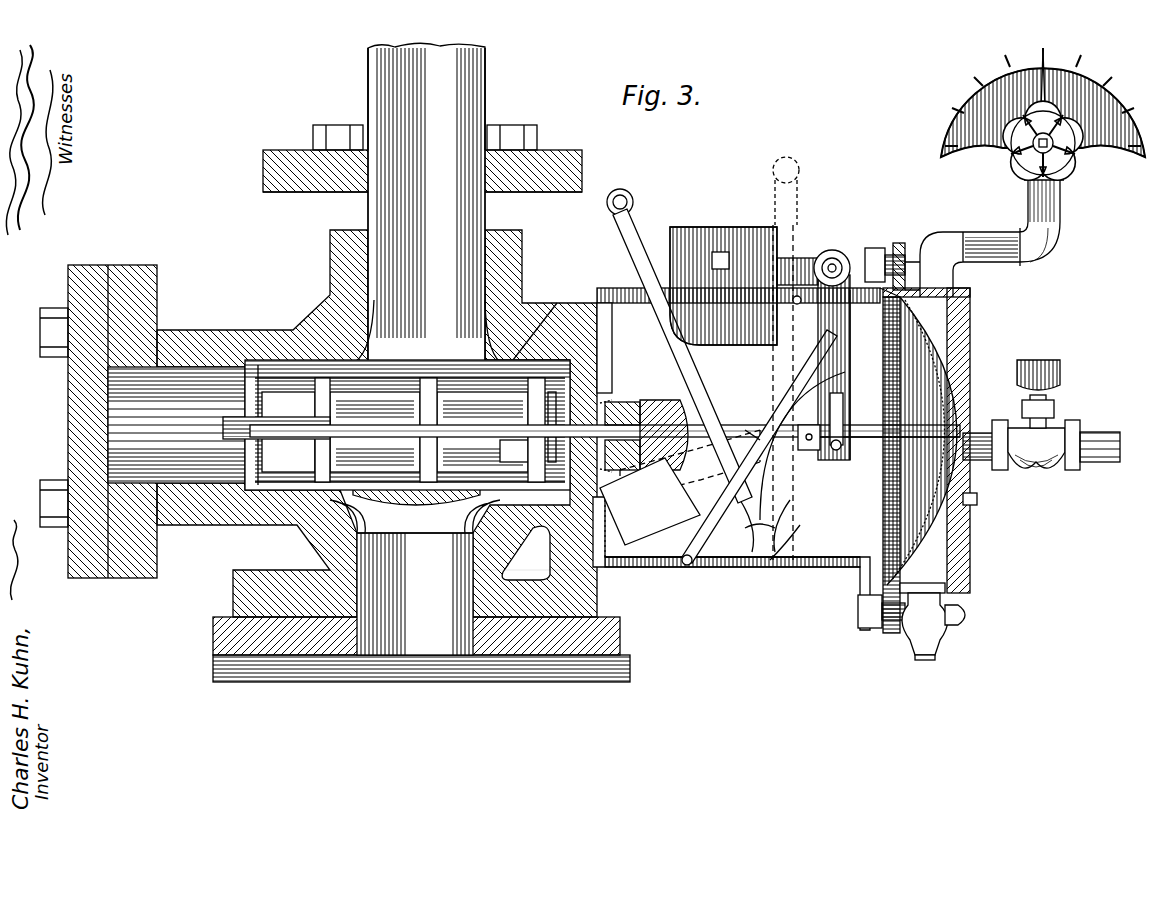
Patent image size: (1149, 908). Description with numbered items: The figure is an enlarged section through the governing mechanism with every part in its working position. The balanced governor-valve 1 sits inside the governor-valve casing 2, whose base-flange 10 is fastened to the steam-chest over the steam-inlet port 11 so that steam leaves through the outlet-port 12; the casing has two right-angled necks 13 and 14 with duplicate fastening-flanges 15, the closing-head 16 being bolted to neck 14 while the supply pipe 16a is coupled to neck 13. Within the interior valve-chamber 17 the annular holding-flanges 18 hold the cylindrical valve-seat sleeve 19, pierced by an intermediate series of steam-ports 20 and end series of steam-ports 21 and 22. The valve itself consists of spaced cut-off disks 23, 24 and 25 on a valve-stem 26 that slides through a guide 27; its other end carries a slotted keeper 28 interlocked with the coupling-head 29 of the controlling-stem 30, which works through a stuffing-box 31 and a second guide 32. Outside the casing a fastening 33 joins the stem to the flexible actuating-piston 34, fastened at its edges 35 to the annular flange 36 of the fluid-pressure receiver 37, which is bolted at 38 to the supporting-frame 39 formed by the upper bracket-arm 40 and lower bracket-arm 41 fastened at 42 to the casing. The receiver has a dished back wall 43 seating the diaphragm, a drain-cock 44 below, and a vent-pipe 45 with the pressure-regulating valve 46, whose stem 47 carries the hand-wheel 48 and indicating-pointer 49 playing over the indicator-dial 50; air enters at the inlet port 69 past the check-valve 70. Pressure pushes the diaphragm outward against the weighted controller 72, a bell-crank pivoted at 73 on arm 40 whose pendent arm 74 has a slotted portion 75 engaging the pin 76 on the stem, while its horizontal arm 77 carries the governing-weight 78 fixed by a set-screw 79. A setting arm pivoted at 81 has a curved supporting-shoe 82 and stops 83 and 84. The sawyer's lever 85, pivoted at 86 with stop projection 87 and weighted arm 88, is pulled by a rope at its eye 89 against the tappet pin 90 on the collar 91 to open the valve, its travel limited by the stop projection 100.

The balanced governor-valve 1 is at (605, 461).
The governor-valve casing 2 is at (318, 312).
The base-flange 10 is at (233, 597).
The steam-inlet port 11 is at (372, 660).
The outlet-port 12 is at (415, 577).
The neck 13 is at (427, 204).
The neck 14 is at (176, 425).
The fastening-flange 15 is at (263, 210).
The closing-head 16 is at (68, 440).
The inlet pipe 16a is at (487, 102).
The interior valve-chamber 17 is at (533, 325).
The annular holding-flanges 18 is at (417, 369).
The valve-seat sleeve 19 is at (407, 425).
The intermediate steam-ports 20 is at (416, 492).
The end steam-ports 21 is at (375, 432).
The end steam-ports 22 is at (514, 451).
The cut-off disk 23 is at (314, 416).
The cut-off disk 24 is at (421, 416).
The cut-off disk 25 is at (528, 416).
The valve-stem 26 is at (482, 432).
The guide 27 is at (245, 446).
The offset slotted keeper 28 is at (526, 553).
The coupling-head 29 is at (542, 427).
The controlling-stem 30 is at (812, 450).
The stuffing-box 31 is at (605, 430).
The guide 32 is at (622, 405).
The fastening 33 is at (895, 470).
The actuating-piston 34 is at (920, 441).
The diaphragm fastening 35 is at (900, 245).
The annular flange 36 is at (934, 264).
The fluid-pressure receiver 37 is at (972, 343).
The bolting 38 is at (876, 248).
The supporting-frame 39 is at (765, 541).
The upper bracket-arm 40 is at (880, 300).
The lower bracket-arm 41 is at (732, 577).
The frame fastening 42 is at (598, 540).
The dished back wall 43 is at (978, 498).
The drain-cock 44 is at (932, 621).
The vent-pipe 45 is at (997, 252).
The pressure-regulating valve 46 is at (1072, 160).
The valve stem 47 is at (1030, 152).
The hand-wheel 48 is at (613, 330).
The indicating-pointer 49 is at (1031, 95).
The indicator-dial 50 is at (955, 93).
The fluid inlet port 69 is at (970, 474).
The check-valve 70 is at (1056, 415).
The weighted controller 72 is at (832, 260).
The pivot 73 is at (834, 266).
The pendent arm 74 is at (851, 355).
The slotted portion 75 is at (844, 405).
The pin 76 is at (836, 451).
The horizontal arm 77 is at (790, 258).
The governing-weight 78 is at (725, 230).
The set-screw 79 is at (720, 270).
The pivot 81 is at (687, 566).
The curved supporting-shoe 82 is at (802, 446).
The stop 83 is at (712, 560).
The stop 84 is at (680, 550).
The sawyer's lever 85 is at (710, 380).
The pivot 86 is at (780, 568).
The stop projection 87 is at (795, 539).
The weighted arm 88 is at (690, 462).
The eye 89 is at (634, 203).
The tappet pin 90 is at (746, 422).
The collar 91 is at (810, 429).
The stop projection 100 is at (799, 305).